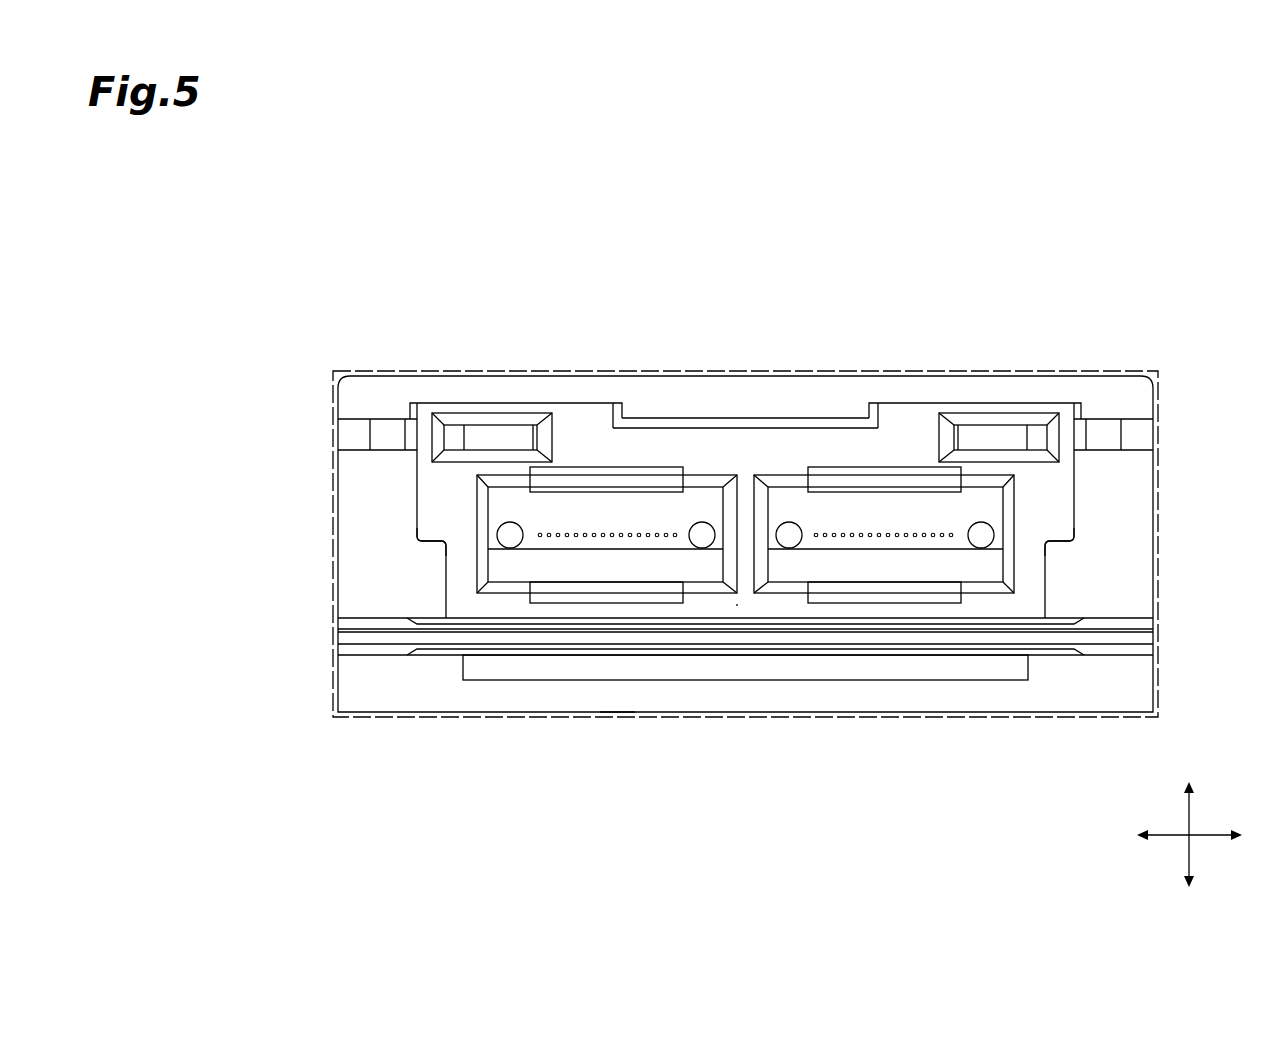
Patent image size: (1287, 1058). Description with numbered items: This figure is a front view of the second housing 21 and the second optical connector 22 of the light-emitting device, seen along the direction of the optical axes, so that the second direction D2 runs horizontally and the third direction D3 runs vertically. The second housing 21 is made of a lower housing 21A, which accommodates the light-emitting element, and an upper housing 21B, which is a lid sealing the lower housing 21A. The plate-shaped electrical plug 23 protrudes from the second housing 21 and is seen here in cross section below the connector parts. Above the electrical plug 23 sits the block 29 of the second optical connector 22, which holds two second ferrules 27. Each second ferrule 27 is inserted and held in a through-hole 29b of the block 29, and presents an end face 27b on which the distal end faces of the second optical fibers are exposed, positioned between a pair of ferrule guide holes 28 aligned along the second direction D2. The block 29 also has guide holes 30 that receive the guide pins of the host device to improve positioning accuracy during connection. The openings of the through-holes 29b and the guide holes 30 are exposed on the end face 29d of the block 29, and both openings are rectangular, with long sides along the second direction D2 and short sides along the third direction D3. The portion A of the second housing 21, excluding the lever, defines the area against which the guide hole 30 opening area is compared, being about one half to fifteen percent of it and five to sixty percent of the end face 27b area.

The second housing 21 is at (978, 277).
The lower housing 21A is at (405, 687).
The upper housing 21B is at (698, 371).
The second optical connector 22 is at (761, 418).
The electrical plug 23 is at (377, 637).
The second ferrule 27 is at (589, 500).
The end face 27b is at (558, 562).
The ferrule guide hole 28 is at (508, 541).
The block 29 is at (908, 418).
The through-hole 29b is at (488, 503).
The end face 29d is at (735, 606).
The guide hole 30 is at (484, 432).
The portion A is at (617, 718).
The second direction D2 is at (1210, 838).
The third direction D3 is at (1187, 862).